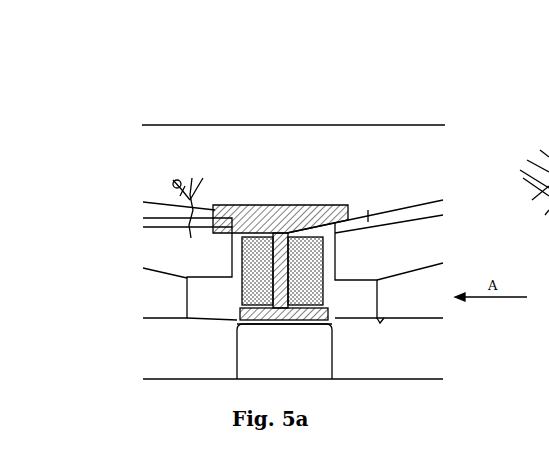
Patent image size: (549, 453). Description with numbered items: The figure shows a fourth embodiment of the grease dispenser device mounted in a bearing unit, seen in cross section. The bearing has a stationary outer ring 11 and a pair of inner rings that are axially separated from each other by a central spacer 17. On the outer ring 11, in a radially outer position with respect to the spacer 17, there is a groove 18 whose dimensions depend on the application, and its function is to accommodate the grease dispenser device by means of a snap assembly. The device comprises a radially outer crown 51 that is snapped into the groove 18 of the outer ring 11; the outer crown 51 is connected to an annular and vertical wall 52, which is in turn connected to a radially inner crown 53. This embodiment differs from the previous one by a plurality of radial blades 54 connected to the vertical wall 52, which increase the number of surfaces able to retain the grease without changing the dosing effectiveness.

The stationary outer ring 11 is at (237, 158).
The spacer 17 is at (298, 353).
The groove 18 is at (289, 208).
The radially outer crown 51 is at (317, 217).
The annular and vertical wall 52 is at (277, 268).
The radially inner crown 53 is at (323, 323).
The radial blades 54 is at (255, 280).